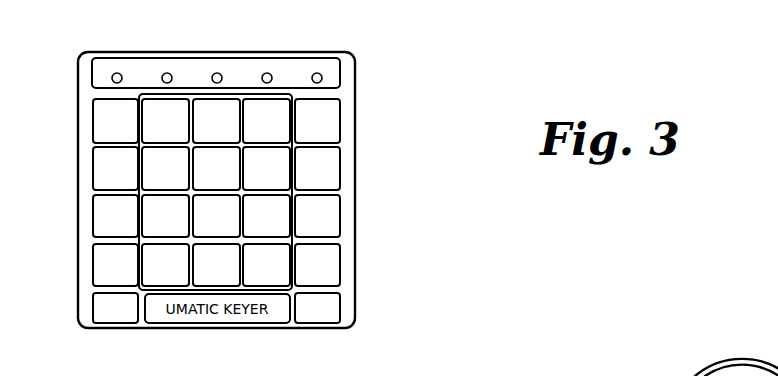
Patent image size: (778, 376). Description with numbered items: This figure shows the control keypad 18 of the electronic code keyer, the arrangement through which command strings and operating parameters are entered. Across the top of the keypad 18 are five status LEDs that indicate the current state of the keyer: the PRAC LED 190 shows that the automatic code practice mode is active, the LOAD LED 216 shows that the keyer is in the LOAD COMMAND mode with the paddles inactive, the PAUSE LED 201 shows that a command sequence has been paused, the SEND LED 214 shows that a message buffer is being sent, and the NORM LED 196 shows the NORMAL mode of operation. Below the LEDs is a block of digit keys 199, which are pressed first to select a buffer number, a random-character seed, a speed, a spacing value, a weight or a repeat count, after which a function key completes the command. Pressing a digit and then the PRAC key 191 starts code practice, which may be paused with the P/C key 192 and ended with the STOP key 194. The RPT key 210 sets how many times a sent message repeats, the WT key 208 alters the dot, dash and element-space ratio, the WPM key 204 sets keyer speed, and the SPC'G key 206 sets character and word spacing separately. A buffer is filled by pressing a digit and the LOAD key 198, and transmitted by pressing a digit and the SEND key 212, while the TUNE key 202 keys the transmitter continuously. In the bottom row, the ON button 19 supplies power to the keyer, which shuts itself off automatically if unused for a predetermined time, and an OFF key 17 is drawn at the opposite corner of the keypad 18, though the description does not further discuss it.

The keypad 18 is at (376, 86).
The PRAC LED 190 is at (92, 74).
The LOAD LED 216 is at (162, 74).
The digit keys 199 is at (192, 94).
The PAUSE LED 201 is at (226, 80).
The SEND LED 214 is at (276, 80).
The NORM LED 196 is at (340, 78).
The PRAC key 191 is at (96, 130).
The RPT key 210 is at (104, 180).
The WT key 208 is at (104, 228).
The P/C key 192 is at (108, 279).
The OFF key 17 is at (104, 317).
The LOAD key 198 is at (160, 277).
The SEND key 212 is at (270, 276).
The TUNE key 202 is at (327, 131).
The SPC'G key 206 is at (327, 180).
The WPM key 204 is at (327, 231).
The STOP key 194 is at (327, 278).
The ON button 19 is at (333, 307).